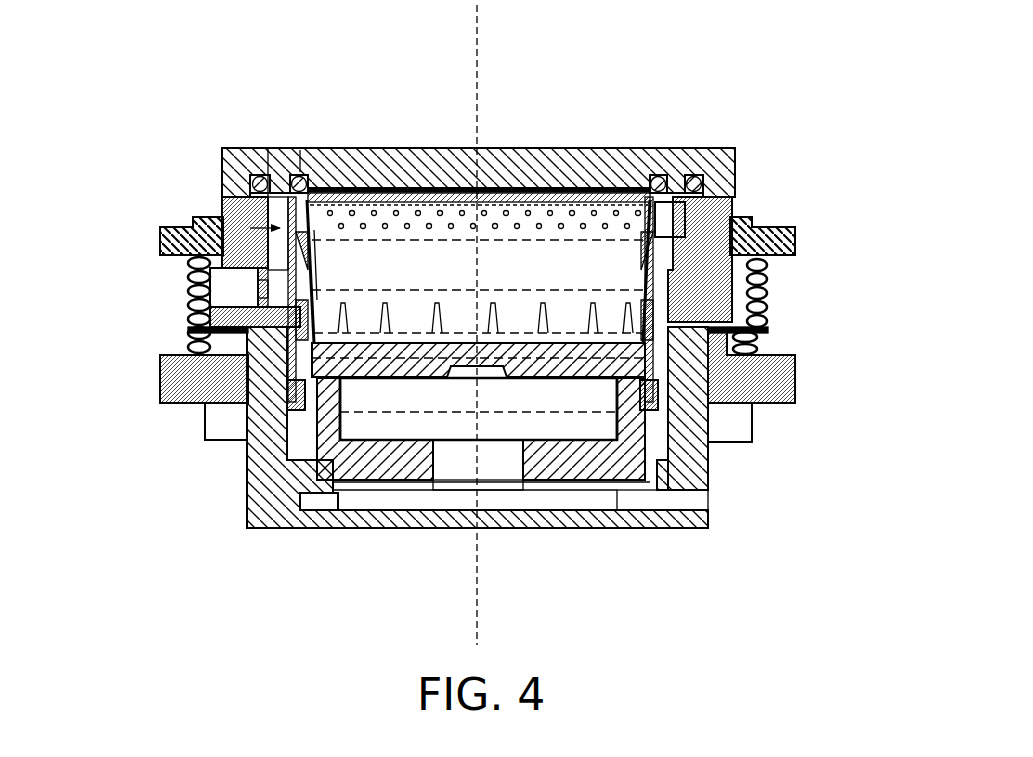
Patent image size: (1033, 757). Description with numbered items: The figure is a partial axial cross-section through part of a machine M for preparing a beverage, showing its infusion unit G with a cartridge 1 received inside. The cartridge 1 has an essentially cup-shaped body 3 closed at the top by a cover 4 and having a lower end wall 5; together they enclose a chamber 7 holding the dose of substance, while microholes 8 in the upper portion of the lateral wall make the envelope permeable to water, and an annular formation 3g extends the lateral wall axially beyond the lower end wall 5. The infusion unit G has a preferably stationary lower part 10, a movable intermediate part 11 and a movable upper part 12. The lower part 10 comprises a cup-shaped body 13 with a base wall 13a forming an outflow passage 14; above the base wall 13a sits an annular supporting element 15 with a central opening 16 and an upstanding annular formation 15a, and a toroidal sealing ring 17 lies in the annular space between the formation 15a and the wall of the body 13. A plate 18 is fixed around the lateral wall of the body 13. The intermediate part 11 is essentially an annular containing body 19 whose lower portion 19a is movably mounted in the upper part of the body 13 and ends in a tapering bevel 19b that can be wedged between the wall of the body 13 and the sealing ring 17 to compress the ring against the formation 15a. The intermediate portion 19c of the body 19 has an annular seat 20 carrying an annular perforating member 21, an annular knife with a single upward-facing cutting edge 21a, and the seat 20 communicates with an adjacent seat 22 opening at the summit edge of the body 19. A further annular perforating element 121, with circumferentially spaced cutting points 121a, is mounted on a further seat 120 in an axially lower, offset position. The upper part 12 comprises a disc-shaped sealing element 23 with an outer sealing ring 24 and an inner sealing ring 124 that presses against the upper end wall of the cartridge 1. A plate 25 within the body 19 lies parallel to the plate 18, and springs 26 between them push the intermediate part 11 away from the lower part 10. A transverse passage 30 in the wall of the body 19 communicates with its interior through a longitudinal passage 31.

The machine M is at (722, 88).
The infusion unit G is at (268, 140).
The cartridge 1 is at (223, 200).
The body 3 is at (306, 288).
The annular formation 3g is at (345, 510).
The cover 4 is at (523, 175).
The lower end wall 5 is at (433, 380).
The chamber 7 is at (500, 272).
The microholes 8 is at (383, 233).
The lower part 10 is at (198, 477).
The intermediate part 11 is at (162, 333).
The upper part 12 is at (175, 120).
The body 13 is at (265, 528).
The base wall 13a is at (413, 487).
The outflow passage 14 is at (620, 497).
The supporting element 15 is at (580, 487).
The projecting annular formation 15a is at (340, 423).
The central opening 16 is at (505, 480).
The toroidal sealing ring 17 is at (245, 445).
The plate 18 is at (763, 404).
The annular containing body 19 is at (765, 293).
The lower portion 19a is at (210, 405).
The tapering bevel 19b is at (245, 420).
The intermediate portion 19c is at (312, 250).
The annular seat 20 is at (722, 200).
The annular perforating member 21 is at (733, 205).
The cutting edge 21a is at (442, 196).
The seat 22 is at (282, 190).
The sealing element 23 is at (577, 172).
The sealing ring 24 is at (250, 176).
The plate 25 is at (165, 225).
The springs 26 is at (190, 310).
The transverse passage 30 is at (190, 293).
The longitudinal passage 31 is at (222, 232).
The seat 120 is at (170, 378).
The annular perforating element 121 is at (795, 400).
The cutting points 121a is at (500, 303).
The sealing ring 124 is at (300, 150).